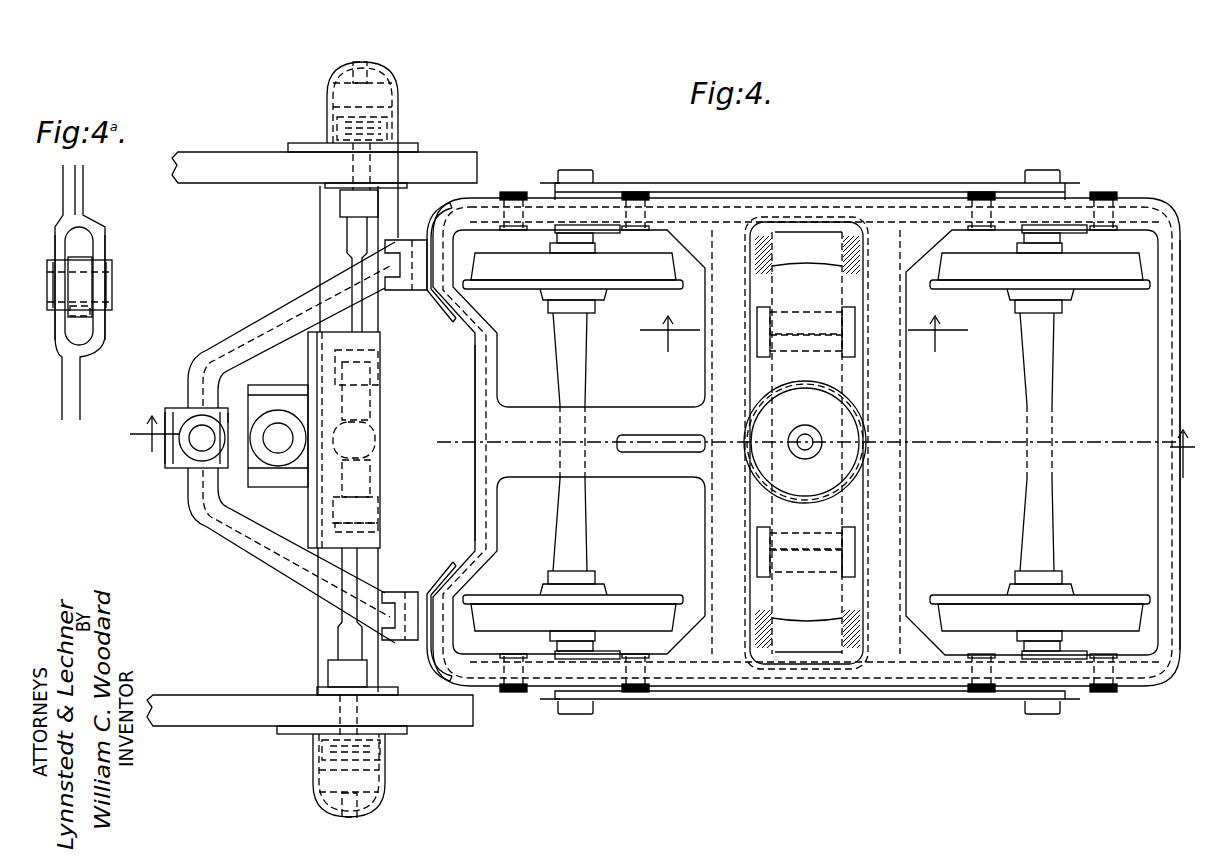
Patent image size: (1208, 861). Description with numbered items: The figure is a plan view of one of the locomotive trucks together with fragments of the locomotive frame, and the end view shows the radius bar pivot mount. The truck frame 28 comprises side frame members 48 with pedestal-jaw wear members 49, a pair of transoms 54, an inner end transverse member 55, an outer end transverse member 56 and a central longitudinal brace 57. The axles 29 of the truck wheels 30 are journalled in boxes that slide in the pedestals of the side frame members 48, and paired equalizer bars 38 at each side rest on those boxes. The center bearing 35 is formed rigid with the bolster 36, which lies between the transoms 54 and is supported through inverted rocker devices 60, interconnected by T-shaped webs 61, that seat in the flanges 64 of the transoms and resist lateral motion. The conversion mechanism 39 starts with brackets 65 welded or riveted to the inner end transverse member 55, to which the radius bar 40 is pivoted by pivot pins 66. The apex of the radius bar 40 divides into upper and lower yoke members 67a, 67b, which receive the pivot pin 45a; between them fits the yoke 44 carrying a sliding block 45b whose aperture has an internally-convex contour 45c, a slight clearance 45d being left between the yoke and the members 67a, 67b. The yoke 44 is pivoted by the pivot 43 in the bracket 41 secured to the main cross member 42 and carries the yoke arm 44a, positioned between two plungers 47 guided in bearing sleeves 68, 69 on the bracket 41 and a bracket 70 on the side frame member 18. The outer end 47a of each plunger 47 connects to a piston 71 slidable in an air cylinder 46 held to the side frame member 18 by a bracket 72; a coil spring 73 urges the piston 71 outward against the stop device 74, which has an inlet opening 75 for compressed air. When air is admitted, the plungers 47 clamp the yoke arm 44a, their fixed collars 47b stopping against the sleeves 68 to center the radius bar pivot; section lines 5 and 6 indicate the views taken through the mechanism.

In FIG. 4, the section line 5- 5 is at (661, 453).
In FIG. 4, the section line 6- 6 is at (804, 335).
In FIG. 4, the side frame member 18 is at (210, 160).
In FIG. 4, the truck frame 28 is at (748, 212).
In FIG. 4, the axle 29 is at (556, 347).
In FIG. 4, the truck wheel 30 is at (526, 284).
In FIG. 4, the center bearing 35 is at (856, 452).
In FIG. 4, the bolster 36 is at (845, 602).
In FIG. 4, the equalizer bar 38 is at (887, 233).
In FIG. 4, the conversion mechanism 39 is at (456, 443).
In FIG. 4A, the radius bar 40 is at (80, 186).
In FIG. 4, the radius bar 40 is at (256, 330).
In FIG. 4, the bracket 41 is at (291, 392).
In FIG. 4, the main cross member 42 is at (320, 236).
In FIG. 4, the pivot 43 is at (282, 446).
In FIG. 4A, the yoke 44 is at (80, 260).
In FIG. 4, the yoke 44 is at (167, 411).
In FIG. 4, the yoke arm 44a is at (370, 437).
In FIG. 4A, the pivot pin 45a is at (88, 302).
In FIG. 4, the pivot pin 45a is at (206, 444).
In FIG. 4A, the sliding block 45b is at (80, 320).
In FIG. 4, the sliding block 45b is at (222, 413).
In FIG. 4A, the internally-convex contour 45c is at (92, 273).
In FIG. 4A, the clearance 45d is at (68, 238).
In FIG. 4, the air cylinder 46 is at (328, 100).
In FIG. 4, the plunger 47 is at (366, 399).
In FIG. 4, the outer end of plunger 47a is at (375, 165).
In FIG. 4, the fixed collar 47b is at (378, 356).
In FIG. 4, the side frame member of truck 48 is at (664, 190).
In FIG. 4, the pedestal-jaw wear member 49 is at (512, 232).
In FIG. 4, the transom 54 is at (714, 369).
In FIG. 4, the inner end transverse member 55 is at (474, 362).
In FIG. 4, the outer end transverse member 56 is at (1158, 384).
In FIG. 4, the central longitudinal brace 57 is at (636, 470).
In FIG. 4, the inverted rocker device 60 is at (762, 321).
In FIG. 4, the T-shaped web 61 is at (792, 316).
In FIG. 4, the flange 64 is at (847, 254).
In FIG. 4, the bracket 65 is at (438, 312).
In FIG. 4, the pivot pin 66 is at (412, 240).
In FIG. 4A, the upper yoke member 67a is at (95, 347).
In FIG. 4, the upper yoke member 67a is at (178, 465).
In FIG. 4A, the lower yoke member 67b is at (57, 337).
In FIG. 4, the bearing sleeve 68 is at (374, 501).
In FIG. 4, the bearing sleeve 69 is at (340, 203).
In FIG. 4, the bracket 70 is at (386, 691).
In FIG. 4, the piston 71 is at (380, 103).
In FIG. 4, the bracket 72 is at (305, 148).
In FIG. 4, the coil spring 73 is at (386, 126).
In FIG. 4, the stop device 74 is at (386, 799).
In FIG. 4, the inlet opening 75 is at (366, 70).